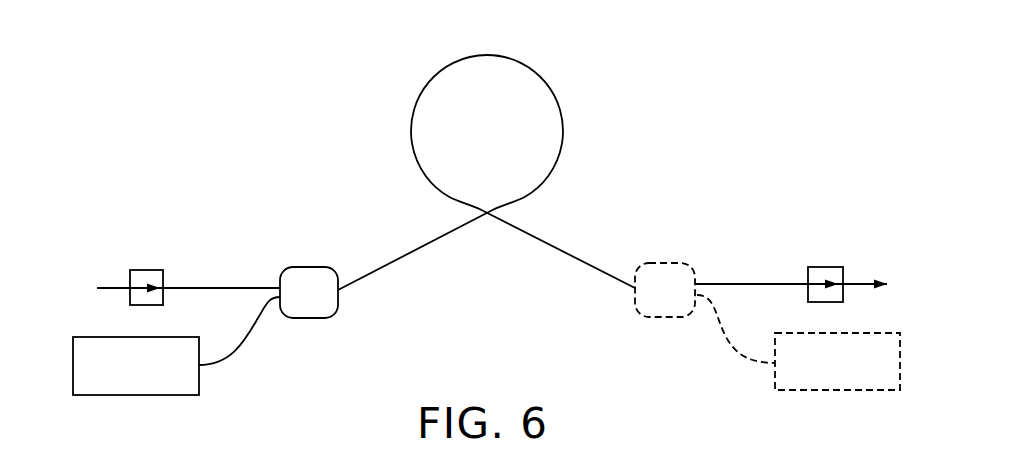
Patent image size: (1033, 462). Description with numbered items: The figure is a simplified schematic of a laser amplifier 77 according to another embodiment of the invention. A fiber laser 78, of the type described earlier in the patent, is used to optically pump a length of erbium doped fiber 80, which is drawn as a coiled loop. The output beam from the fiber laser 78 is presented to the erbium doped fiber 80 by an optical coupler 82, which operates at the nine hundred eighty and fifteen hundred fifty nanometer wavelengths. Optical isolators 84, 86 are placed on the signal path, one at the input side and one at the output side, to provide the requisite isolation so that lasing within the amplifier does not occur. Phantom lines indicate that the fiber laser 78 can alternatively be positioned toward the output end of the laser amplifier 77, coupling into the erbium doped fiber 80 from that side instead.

The laser amplifier 77 is at (468, 305).
The fiber laser 78 is at (103, 337).
The erbium doped fiber 80 is at (410, 132).
The optical coupler 82 is at (302, 282).
The optical isolator 84 is at (139, 270).
The optical isolator 86 is at (820, 267).